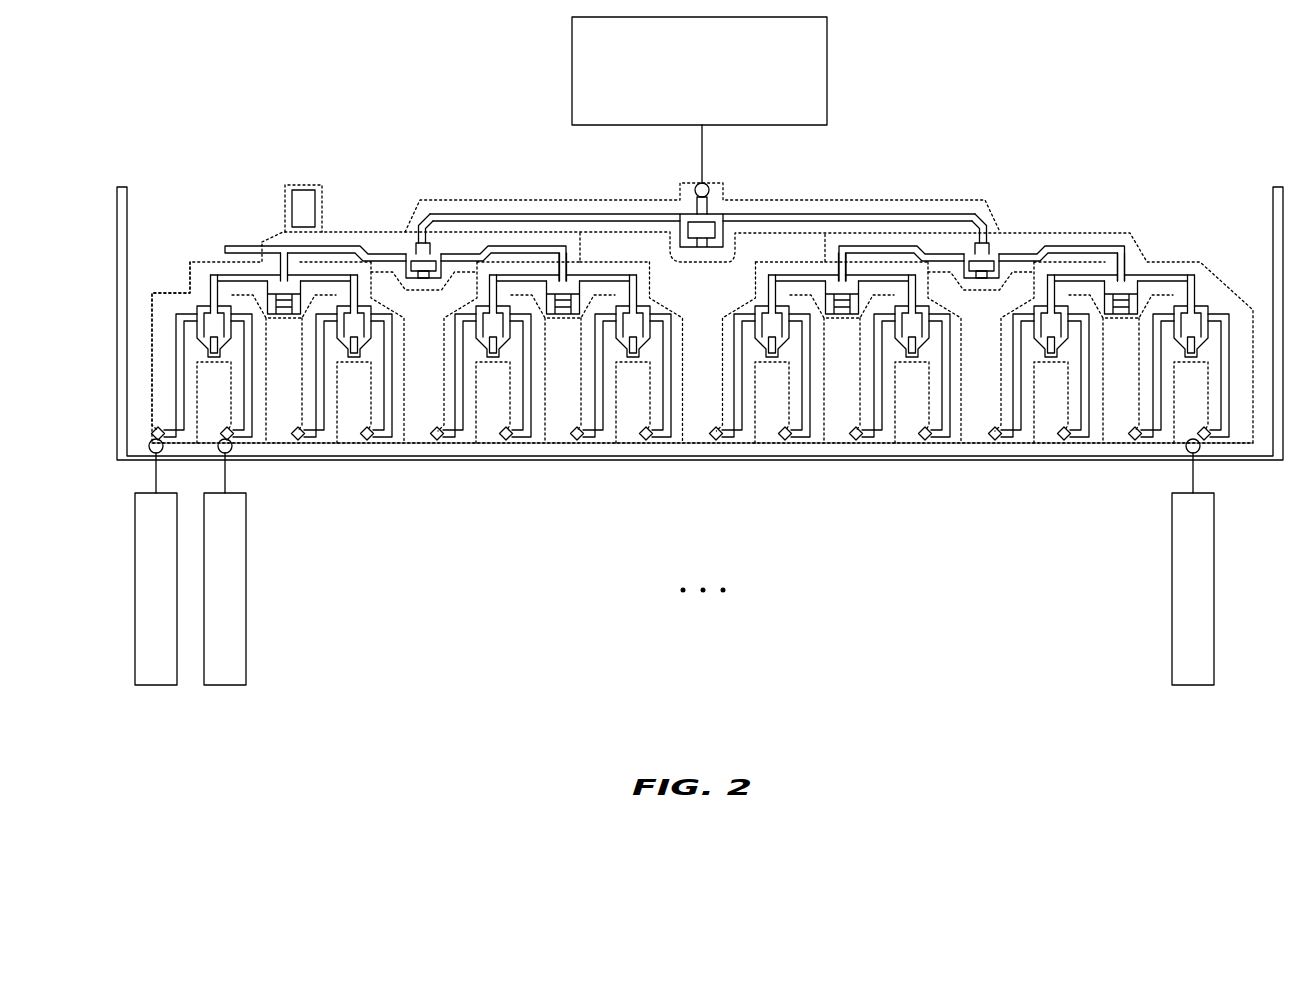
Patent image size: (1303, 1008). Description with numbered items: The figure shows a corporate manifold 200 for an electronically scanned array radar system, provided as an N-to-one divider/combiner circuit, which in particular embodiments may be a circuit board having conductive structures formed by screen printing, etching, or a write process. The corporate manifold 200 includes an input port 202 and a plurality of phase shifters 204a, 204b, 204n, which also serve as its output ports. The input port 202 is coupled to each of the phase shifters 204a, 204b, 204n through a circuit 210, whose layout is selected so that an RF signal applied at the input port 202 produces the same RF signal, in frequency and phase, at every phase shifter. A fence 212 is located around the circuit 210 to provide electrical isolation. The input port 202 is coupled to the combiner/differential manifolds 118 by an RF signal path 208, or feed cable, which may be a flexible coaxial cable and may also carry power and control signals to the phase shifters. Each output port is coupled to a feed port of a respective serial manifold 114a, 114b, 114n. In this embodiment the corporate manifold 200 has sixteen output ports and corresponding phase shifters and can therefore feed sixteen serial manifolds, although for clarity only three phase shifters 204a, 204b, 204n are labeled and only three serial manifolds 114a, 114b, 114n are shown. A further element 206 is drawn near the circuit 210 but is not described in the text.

The corporate manifold 200 is at (198, 172).
The input port 202 is at (712, 182).
The phase shifter 204a is at (148, 452).
The phase shifter 204b is at (233, 446).
The phase shifter 204n is at (1186, 452).
The auxiliary port 206 is at (305, 185).
The RF signal path 208 is at (700, 145).
The circuit 210 is at (500, 212).
The fence 212 is at (445, 200).
The combiner/differential manifolds 118 is at (723, 112).
The serial manifold 114a is at (160, 685).
The serial manifold 114b is at (230, 685).
The serial manifold 114n is at (1198, 685).